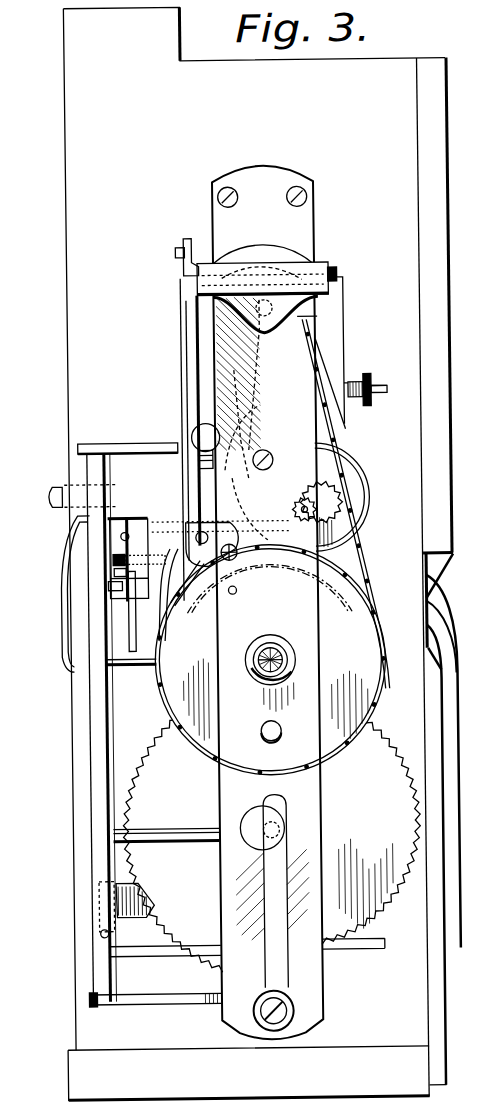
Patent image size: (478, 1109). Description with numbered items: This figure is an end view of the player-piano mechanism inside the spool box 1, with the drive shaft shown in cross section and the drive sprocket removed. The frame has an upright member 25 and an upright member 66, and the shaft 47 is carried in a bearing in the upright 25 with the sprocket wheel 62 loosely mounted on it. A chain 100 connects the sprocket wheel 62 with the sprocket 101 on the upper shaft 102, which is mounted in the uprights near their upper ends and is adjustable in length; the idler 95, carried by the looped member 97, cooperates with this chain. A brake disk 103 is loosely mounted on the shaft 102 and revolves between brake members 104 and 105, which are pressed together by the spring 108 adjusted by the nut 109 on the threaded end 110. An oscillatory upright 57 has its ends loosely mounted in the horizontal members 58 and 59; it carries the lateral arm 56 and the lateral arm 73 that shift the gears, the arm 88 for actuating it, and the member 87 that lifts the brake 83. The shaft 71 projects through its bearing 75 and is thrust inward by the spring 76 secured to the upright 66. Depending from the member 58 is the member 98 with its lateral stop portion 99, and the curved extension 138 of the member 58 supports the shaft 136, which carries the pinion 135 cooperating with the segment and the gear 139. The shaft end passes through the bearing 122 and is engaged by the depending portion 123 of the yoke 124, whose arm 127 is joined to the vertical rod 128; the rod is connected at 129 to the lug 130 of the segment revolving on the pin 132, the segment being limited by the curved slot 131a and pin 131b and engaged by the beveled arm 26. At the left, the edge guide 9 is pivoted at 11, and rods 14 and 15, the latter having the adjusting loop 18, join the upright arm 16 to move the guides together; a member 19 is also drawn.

The spool box 1 is at (69, 825).
The edge guide 9 is at (55, 490).
The pivot 11 is at (246, 473).
The rod or wire 14 is at (118, 533).
The rod or wire 15 is at (110, 590).
The upright arm 16 is at (124, 516).
The loop portion 18 is at (133, 664).
The curved bracket 19 is at (66, 535).
The upright member 25 is at (259, 171).
The arm 26 is at (162, 621).
The shaft 47 is at (283, 652).
The lateral arm 56 is at (145, 661).
The upright 57 is at (88, 715).
The horizontal member 58 is at (85, 441).
The horizontal member 59 is at (170, 1003).
The sprocket wheel 62 is at (270, 659).
The upright member 66 is at (319, 795).
The shaft 71 is at (265, 825).
The lateral arm 73 is at (186, 836).
The bearing 75 is at (250, 820).
The spring 76 is at (260, 913).
The brake 83 is at (96, 892).
The member 87 is at (118, 922).
The arm 88 is at (165, 951).
The idler 95 is at (193, 428).
The looped member 97 is at (200, 437).
The member 98 is at (181, 473).
The lateral portion 99 is at (112, 578).
The chain 100 is at (250, 386).
The sprocket 101 is at (322, 345).
The shaft 102 is at (320, 317).
The brake disk 103 is at (300, 258).
The brake member 104 is at (181, 317).
The brake member 105 is at (347, 300).
The spring 108 is at (368, 365).
The nut 109 is at (374, 385).
The threaded end 110 is at (375, 398).
The bearing 122 is at (275, 341).
The depending portion 123 is at (226, 330).
The yoke 124 is at (258, 272).
The arm 127 is at (184, 262).
The vertical rod 128 is at (196, 360).
The connection 129 is at (245, 535).
The lug 130 is at (238, 552).
The curved slot 131a is at (235, 596).
The pin 131b is at (237, 590).
The pin 132 is at (221, 550).
The pinion 135 is at (362, 473).
The shaft 136 is at (280, 464).
The curved extension 138 is at (363, 500).
The gear 139 is at (352, 523).